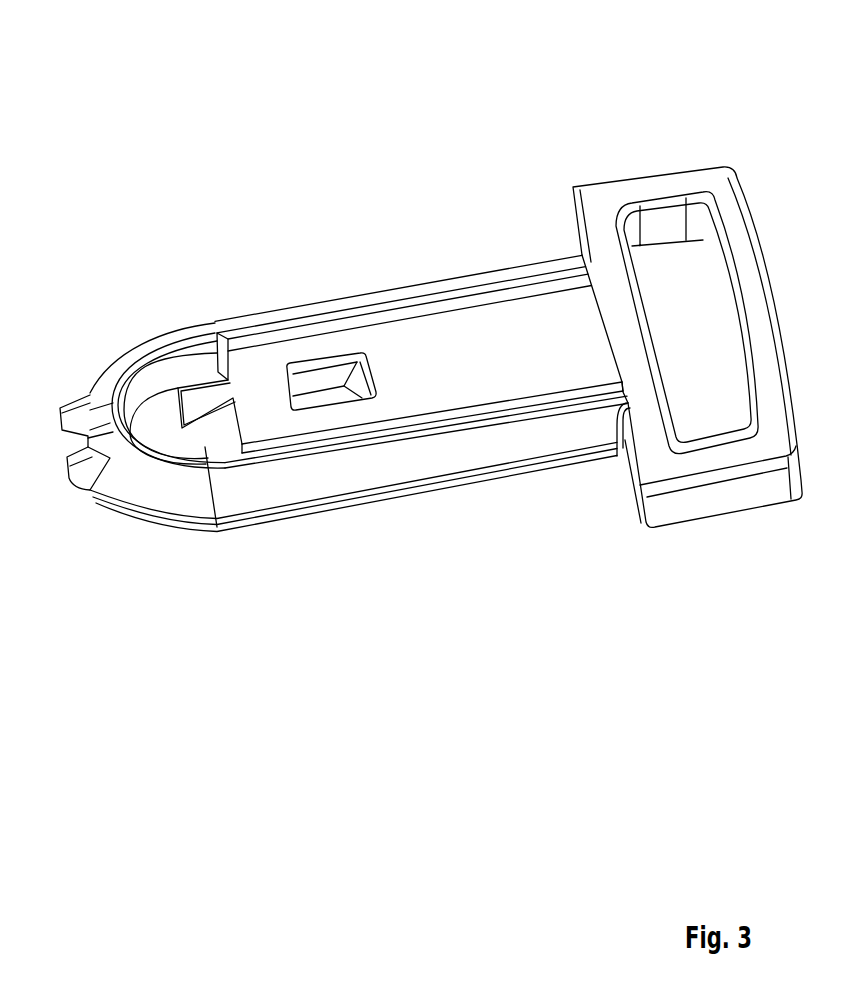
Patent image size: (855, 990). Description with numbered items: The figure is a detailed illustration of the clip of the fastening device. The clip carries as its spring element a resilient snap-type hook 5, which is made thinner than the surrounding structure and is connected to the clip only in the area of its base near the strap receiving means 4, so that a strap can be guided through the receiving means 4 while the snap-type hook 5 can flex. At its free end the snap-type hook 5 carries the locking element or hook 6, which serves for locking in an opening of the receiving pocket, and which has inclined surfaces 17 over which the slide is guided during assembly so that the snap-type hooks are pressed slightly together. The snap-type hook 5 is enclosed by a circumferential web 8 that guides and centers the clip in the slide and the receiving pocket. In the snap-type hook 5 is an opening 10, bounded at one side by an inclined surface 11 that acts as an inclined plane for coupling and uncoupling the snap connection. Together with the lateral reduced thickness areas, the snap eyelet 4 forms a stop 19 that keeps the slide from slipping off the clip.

The strap receiving means 4 is at (710, 278).
The snap-type hook 5 is at (492, 336).
The hook 6 is at (152, 418).
The circumferential web 8 is at (520, 440).
The opening 10 is at (330, 393).
The inclined surface 11 is at (357, 387).
The inclined surfaces 17 is at (200, 358).
The stop 19 is at (287, 395).